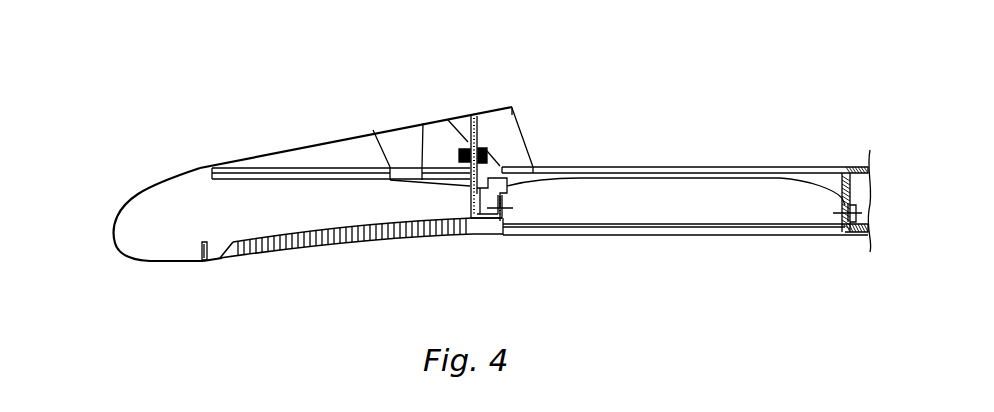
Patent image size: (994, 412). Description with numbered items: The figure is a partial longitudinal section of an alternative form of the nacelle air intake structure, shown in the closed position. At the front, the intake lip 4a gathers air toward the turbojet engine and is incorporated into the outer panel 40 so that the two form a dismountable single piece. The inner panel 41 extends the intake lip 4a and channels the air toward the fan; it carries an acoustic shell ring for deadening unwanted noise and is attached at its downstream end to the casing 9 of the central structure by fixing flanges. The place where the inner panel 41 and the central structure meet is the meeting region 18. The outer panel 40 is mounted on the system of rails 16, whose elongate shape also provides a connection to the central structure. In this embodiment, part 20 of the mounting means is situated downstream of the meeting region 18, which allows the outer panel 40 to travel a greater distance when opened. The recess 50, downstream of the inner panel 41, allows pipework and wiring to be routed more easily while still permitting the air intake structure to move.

The intake lip 4a is at (118, 222).
The outer panel 40 is at (363, 125).
The part of the mounting means 20 is at (513, 167).
The system of rails 16 is at (717, 173).
The recess 50 is at (676, 210).
The casing 9 is at (723, 225).
The meeting region 18 is at (518, 240).
The inner panel 41 is at (297, 255).